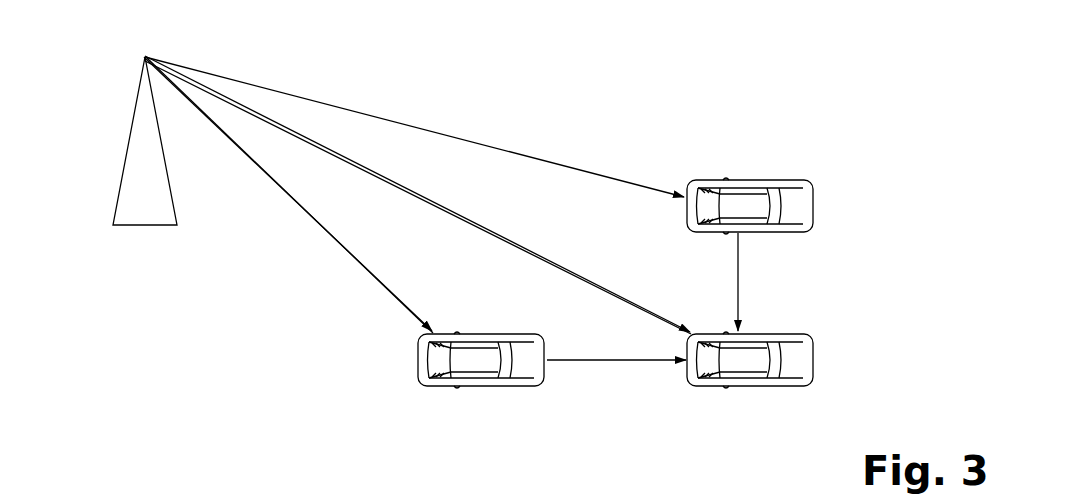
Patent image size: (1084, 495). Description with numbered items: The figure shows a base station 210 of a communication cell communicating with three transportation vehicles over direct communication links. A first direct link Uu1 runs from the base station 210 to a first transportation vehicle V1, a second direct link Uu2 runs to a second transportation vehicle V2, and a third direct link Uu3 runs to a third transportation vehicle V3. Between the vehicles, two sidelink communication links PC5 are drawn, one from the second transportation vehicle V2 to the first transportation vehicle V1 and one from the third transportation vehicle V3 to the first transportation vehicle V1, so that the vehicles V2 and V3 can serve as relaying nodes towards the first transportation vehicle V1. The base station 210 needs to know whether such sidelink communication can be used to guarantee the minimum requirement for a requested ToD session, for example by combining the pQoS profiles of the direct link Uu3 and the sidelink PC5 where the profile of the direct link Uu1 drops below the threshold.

The base station 210 is at (135, 110).
The direct communication link Uu2 is at (478, 143).
The direct communication link Uu1 is at (545, 259).
The direct communication link Uu3 is at (345, 248).
The transportation vehicle V2 is at (736, 180).
The first transportation vehicle V1 is at (706, 333).
The transportation vehicle V3 is at (470, 333).
The sidelink communication link PC5 is at (740, 282).